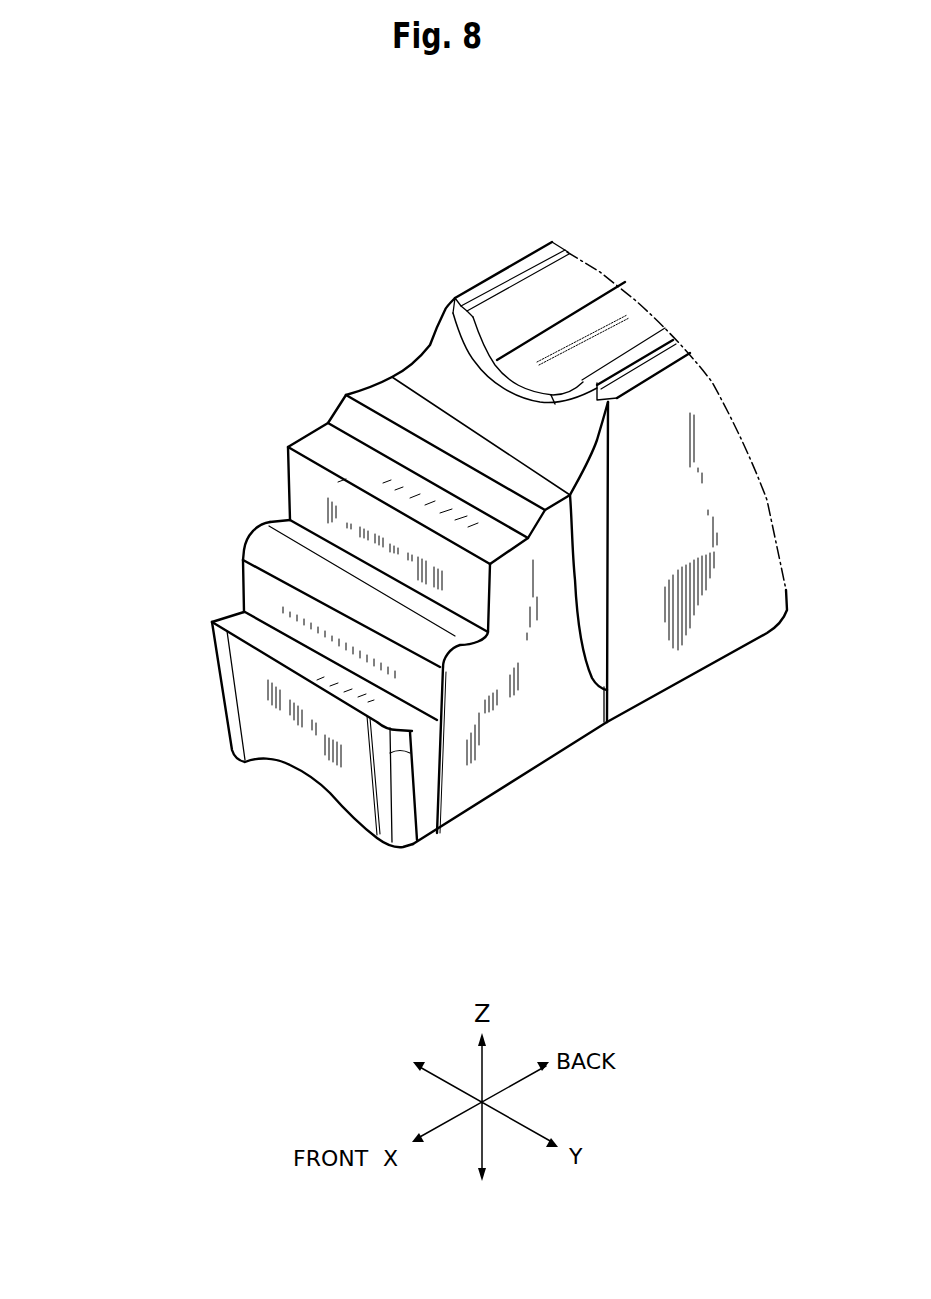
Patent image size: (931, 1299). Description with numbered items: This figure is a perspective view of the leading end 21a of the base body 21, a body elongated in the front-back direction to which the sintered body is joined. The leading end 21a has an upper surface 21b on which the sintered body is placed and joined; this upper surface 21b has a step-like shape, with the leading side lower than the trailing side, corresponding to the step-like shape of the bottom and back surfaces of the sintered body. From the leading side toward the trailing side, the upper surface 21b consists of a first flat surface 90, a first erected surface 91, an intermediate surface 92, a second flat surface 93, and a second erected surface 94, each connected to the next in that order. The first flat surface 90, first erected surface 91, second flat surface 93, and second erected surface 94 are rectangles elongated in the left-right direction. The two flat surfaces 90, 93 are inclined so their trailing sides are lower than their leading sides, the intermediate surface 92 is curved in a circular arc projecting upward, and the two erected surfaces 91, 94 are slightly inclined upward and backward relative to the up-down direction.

The base body 21 is at (497, 284).
The leading end 21a is at (523, 717).
The upper surface 21b is at (253, 557).
The first flat surface 90 is at (238, 624).
The first erected surface 91 is at (257, 590).
The intermediate surface 92 is at (263, 547).
The second flat surface 93 is at (283, 532).
The second erected surface 94 is at (310, 487).